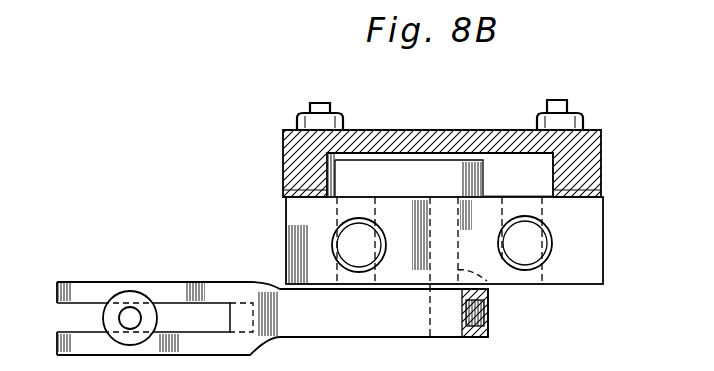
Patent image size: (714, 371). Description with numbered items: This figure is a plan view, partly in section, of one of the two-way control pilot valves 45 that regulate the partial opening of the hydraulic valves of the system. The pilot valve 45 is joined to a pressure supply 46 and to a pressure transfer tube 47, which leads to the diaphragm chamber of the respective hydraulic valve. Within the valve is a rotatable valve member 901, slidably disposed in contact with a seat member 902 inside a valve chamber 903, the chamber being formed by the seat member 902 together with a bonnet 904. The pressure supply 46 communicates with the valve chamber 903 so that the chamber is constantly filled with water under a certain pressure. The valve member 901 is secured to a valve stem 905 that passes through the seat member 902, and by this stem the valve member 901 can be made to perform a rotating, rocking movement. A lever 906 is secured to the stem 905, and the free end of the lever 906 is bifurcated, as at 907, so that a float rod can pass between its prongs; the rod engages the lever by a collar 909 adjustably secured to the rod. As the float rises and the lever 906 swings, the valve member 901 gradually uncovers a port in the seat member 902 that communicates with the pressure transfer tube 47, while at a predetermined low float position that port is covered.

The two-way control pilot valve 45 is at (603, 228).
The pressure supply 46 is at (540, 252).
The pressure transfer tube 47 is at (347, 240).
The rotatable valve member 901 is at (383, 170).
The seat member 902 is at (491, 196).
The valve chamber 903 is at (495, 163).
The bonnet 904 is at (603, 167).
The valve stem 905 is at (490, 283).
The lever 906 is at (363, 338).
The bifurcated end of lever 907 is at (207, 272).
The collar 909 is at (128, 293).